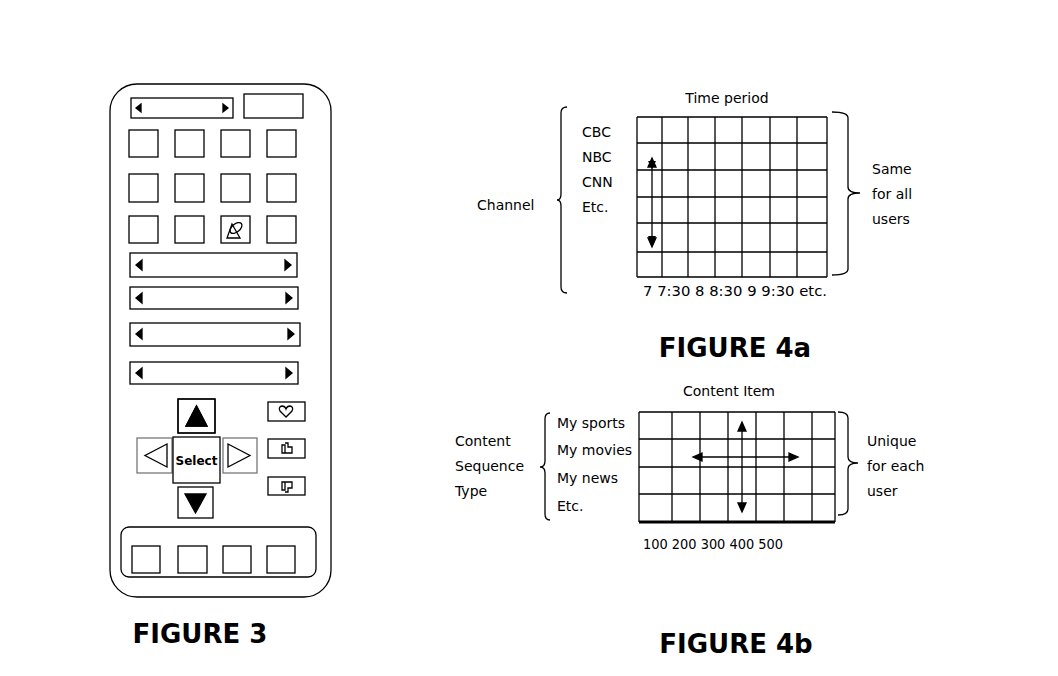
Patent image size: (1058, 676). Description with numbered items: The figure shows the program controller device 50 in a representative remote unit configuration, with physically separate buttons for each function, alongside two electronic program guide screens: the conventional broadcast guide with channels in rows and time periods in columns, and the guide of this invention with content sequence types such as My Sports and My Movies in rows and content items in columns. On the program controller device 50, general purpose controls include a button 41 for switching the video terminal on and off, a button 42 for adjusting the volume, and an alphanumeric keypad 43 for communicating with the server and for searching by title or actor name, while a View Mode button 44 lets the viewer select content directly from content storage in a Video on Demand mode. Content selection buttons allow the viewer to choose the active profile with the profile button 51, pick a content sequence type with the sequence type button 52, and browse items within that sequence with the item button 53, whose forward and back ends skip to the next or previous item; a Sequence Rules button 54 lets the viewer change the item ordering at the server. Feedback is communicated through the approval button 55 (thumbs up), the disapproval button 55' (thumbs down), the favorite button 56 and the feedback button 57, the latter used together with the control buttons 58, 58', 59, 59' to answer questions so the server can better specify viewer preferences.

The on/off button 41 is at (272, 95).
The volume button 42 is at (297, 368).
The alphanumeric keypad 43 is at (128, 143).
The View Mode button 44 is at (128, 108).
The program controller device 50 is at (331, 173).
The profile button 51 is at (302, 556).
The sequence type button 52 is at (130, 295).
The item button 53 is at (130, 330).
The Sequence Rules button 54 is at (130, 263).
The approval button 55 is at (333, 473).
The disapproval button 55' is at (334, 514).
The favorite button 56 is at (305, 412).
The feedback button 57 is at (246, 219).
The control button 58 is at (114, 477).
The control button 58' is at (304, 443).
The control button 59 is at (143, 537).
The control button 59' is at (134, 405).